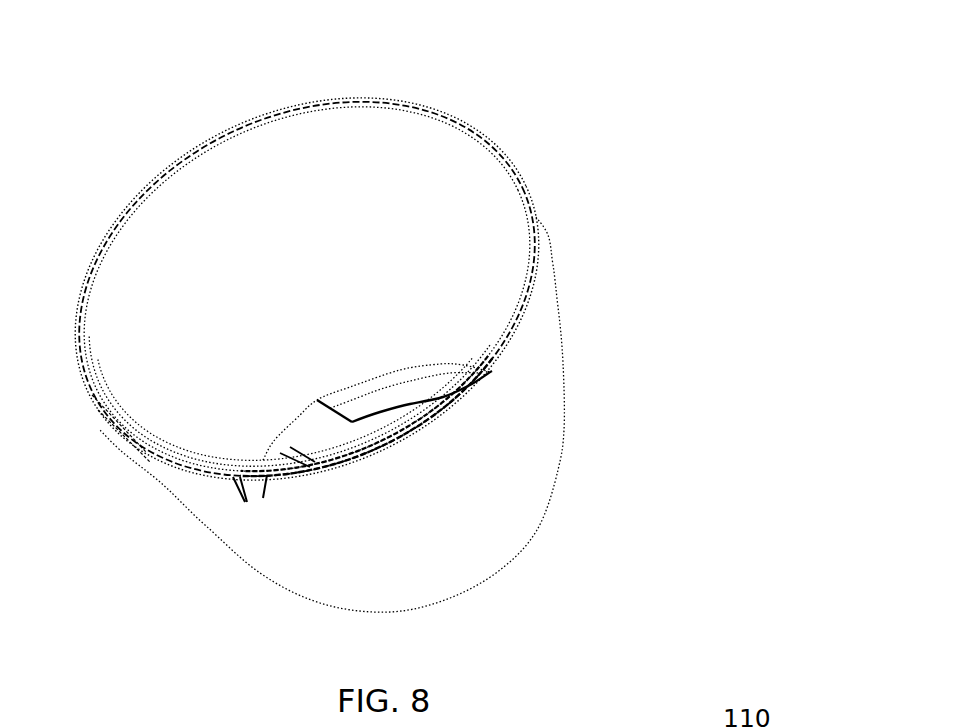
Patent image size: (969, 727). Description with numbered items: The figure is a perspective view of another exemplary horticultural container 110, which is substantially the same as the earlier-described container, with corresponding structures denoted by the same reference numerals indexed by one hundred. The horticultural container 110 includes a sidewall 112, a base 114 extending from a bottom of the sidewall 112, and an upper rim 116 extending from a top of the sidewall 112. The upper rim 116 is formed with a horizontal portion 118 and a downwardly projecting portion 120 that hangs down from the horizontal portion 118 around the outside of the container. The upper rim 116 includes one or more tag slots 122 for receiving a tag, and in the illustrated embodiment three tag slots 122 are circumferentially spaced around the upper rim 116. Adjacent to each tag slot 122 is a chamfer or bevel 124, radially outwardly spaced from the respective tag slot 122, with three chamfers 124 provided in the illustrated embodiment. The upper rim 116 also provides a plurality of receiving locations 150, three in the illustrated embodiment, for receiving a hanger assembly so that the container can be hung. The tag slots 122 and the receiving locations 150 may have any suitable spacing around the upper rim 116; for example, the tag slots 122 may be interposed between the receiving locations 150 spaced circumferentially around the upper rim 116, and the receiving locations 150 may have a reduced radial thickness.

The horticultural container 110 is at (666, 138).
The sidewall 112 is at (552, 410).
The base 114 is at (421, 384).
The upper rim 116 is at (545, 262).
The horizontal portion 118 is at (148, 452).
The downwardly projecting portion 120 is at (380, 465).
The tag slot 122 is at (477, 378).
The chamfer 124 is at (458, 400).
The receiving location 150 is at (258, 493).